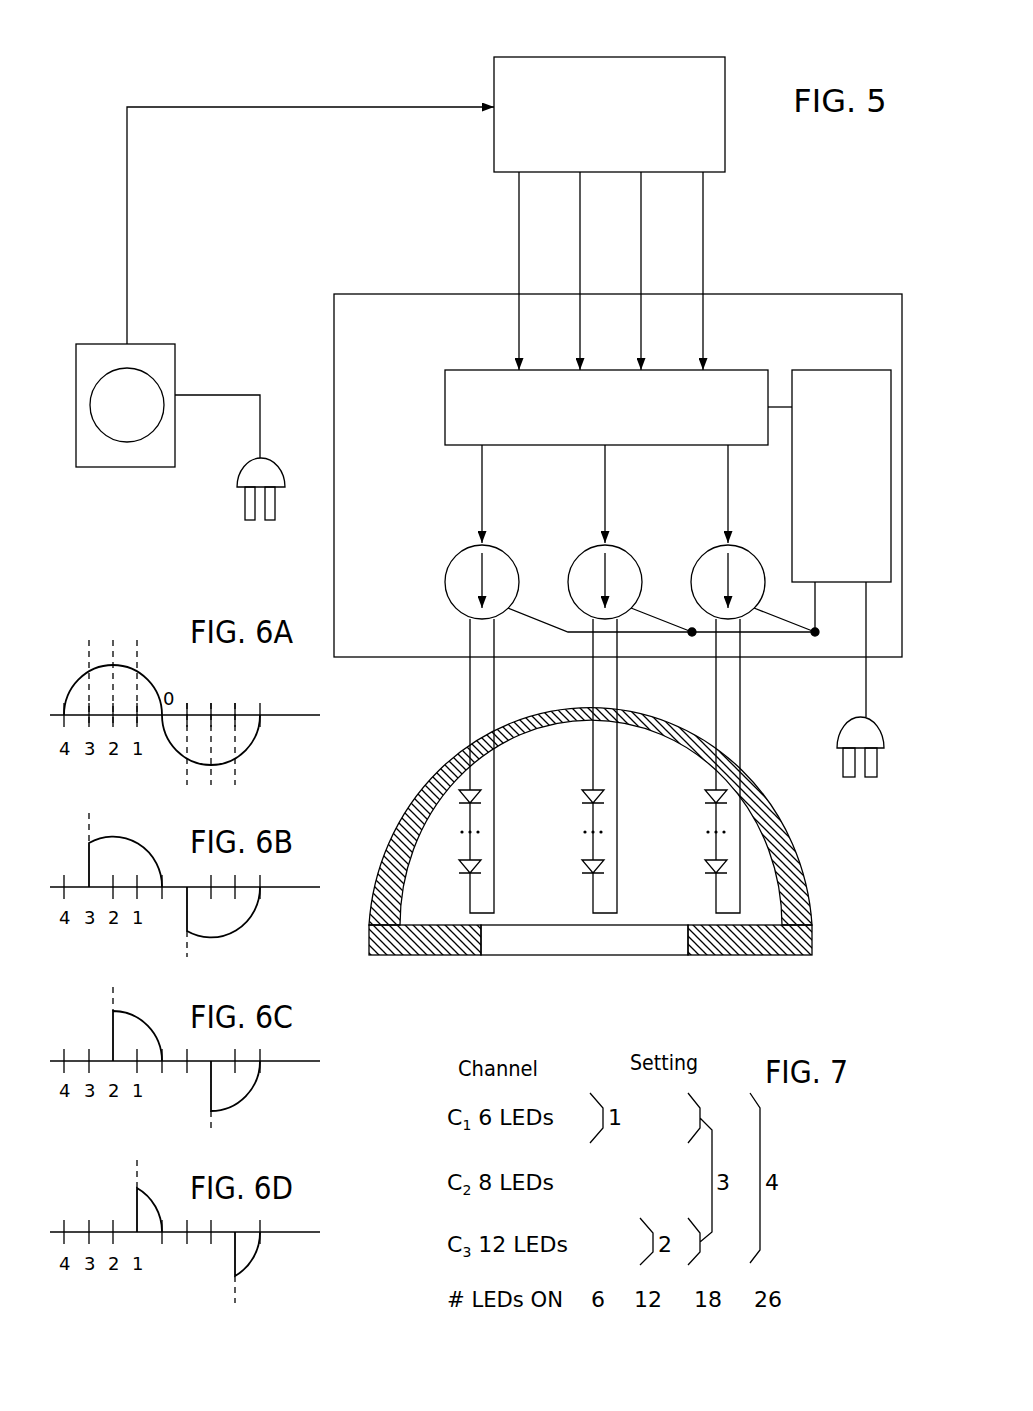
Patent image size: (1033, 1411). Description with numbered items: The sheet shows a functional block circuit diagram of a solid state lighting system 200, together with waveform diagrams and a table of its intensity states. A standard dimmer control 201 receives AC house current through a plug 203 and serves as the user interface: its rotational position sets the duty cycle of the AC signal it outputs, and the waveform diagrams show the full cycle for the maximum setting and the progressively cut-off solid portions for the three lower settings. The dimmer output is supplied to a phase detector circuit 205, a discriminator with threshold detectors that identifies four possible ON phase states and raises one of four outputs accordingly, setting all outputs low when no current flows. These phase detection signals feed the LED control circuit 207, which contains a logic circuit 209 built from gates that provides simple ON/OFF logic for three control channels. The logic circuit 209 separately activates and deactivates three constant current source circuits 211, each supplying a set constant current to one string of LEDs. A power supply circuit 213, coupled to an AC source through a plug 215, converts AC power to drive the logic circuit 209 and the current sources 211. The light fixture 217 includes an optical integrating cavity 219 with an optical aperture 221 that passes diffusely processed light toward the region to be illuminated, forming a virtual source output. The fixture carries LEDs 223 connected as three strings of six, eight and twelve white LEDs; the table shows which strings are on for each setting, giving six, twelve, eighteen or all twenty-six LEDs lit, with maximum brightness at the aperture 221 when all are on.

The solid state lighting system 200 is at (162, 82).
The dimmer control 201 is at (175, 367).
The plug 203 is at (235, 485).
The phase detector circuit 205 is at (681, 57).
The LED control circuit 207 is at (407, 293).
The logic circuit 209 is at (728, 368).
The constant current source circuits 211 is at (691, 569).
The power supply circuit 213 is at (828, 368).
The plug 215 is at (870, 782).
The light fixture 217 is at (420, 775).
The optical integrating cavity 219 is at (588, 768).
The optical aperture 221 is at (603, 940).
The LEDs 223 is at (483, 862).